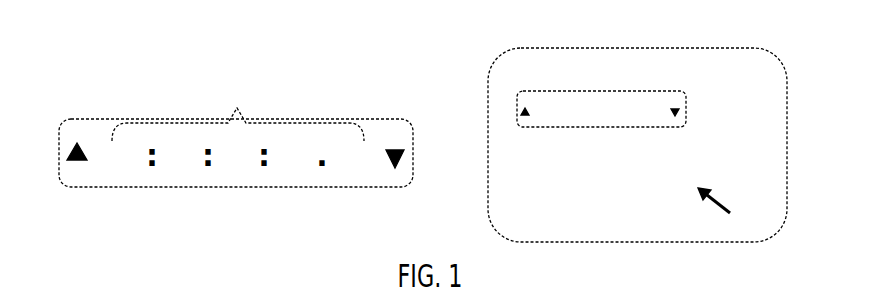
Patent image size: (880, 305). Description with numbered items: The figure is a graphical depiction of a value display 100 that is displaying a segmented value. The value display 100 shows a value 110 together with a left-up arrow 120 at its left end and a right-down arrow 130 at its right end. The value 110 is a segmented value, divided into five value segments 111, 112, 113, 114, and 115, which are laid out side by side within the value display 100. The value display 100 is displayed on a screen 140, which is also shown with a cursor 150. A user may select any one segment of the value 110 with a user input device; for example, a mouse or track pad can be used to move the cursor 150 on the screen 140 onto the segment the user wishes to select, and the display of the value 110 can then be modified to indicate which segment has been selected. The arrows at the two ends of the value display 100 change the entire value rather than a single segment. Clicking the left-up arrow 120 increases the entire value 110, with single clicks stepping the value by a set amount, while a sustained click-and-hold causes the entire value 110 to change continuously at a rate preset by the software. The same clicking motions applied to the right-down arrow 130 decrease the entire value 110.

The value display 100 is at (599, 91).
The value 110 is at (238, 113).
The value segment 111 is at (128, 170).
The value segment 112 is at (183, 170).
The value segment 113 is at (237, 170).
The value segment 114 is at (290, 170).
The value segment 115 is at (344, 170).
The left-up arrow 120 is at (76, 164).
The right-down arrow 130 is at (388, 150).
The screen 140 is at (787, 145).
The cursor 150 is at (730, 193).